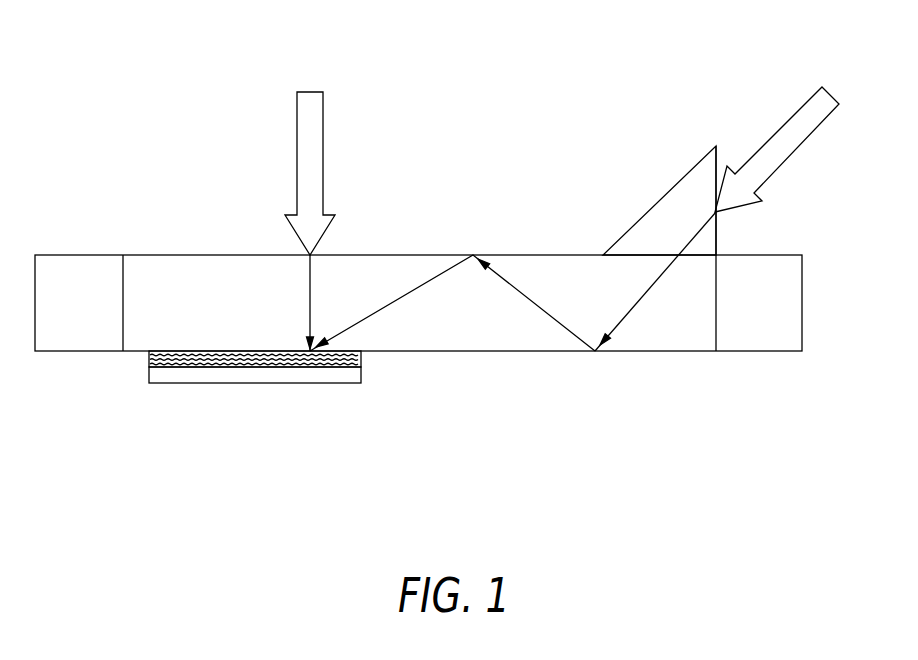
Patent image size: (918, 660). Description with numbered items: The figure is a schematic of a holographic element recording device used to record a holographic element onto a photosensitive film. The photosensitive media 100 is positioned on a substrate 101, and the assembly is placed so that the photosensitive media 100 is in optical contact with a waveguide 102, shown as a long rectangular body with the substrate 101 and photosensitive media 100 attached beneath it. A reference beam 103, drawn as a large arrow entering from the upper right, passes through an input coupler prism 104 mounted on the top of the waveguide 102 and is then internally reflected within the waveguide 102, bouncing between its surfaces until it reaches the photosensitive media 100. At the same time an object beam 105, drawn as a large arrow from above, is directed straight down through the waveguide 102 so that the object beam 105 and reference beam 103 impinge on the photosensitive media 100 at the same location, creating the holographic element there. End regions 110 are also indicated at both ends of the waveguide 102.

The photosensitive media 100 is at (147, 361).
The substrate 101 is at (263, 375).
The waveguide 102 is at (672, 303).
The reference beam 103 is at (790, 130).
The input coupler prism 104 is at (682, 232).
The object beam 105 is at (303, 163).
The end block 110 is at (68, 295).